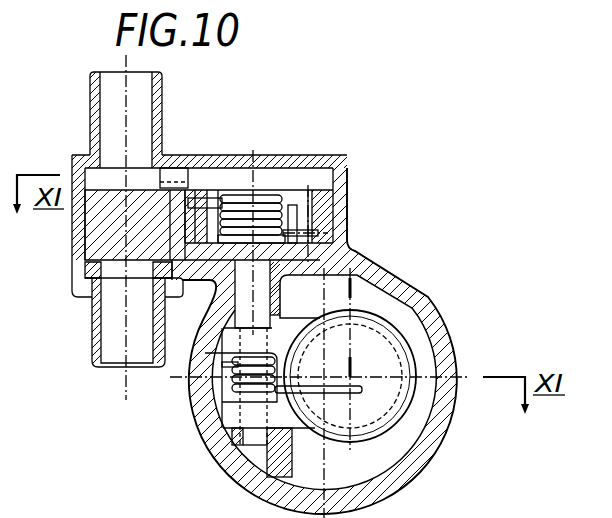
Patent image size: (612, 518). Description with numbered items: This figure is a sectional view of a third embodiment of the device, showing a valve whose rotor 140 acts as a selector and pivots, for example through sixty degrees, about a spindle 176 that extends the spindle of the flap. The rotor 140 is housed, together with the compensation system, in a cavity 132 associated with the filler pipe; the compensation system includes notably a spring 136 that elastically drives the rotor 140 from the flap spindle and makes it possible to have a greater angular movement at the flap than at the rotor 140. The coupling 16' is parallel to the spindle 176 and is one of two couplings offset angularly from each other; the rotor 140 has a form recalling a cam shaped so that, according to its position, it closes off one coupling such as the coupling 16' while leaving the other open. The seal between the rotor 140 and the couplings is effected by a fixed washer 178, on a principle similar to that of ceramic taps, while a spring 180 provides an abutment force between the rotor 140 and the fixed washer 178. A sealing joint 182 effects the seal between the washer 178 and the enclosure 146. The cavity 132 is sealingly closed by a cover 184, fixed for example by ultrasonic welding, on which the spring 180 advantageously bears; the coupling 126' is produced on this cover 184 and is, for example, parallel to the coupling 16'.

The coupling 126' is at (153, 120).
The cover 184 is at (209, 143).
The cavity 132 is at (264, 315).
The enclosure 146 is at (101, 225).
The spring 180 is at (191, 181).
The spindle 176 is at (277, 179).
The spring 136 is at (322, 178).
The rotor 140 is at (95, 269).
The fixed washer 178 is at (55, 289).
The sealing joint 182 is at (100, 316).
The coupling 16' is at (111, 341).